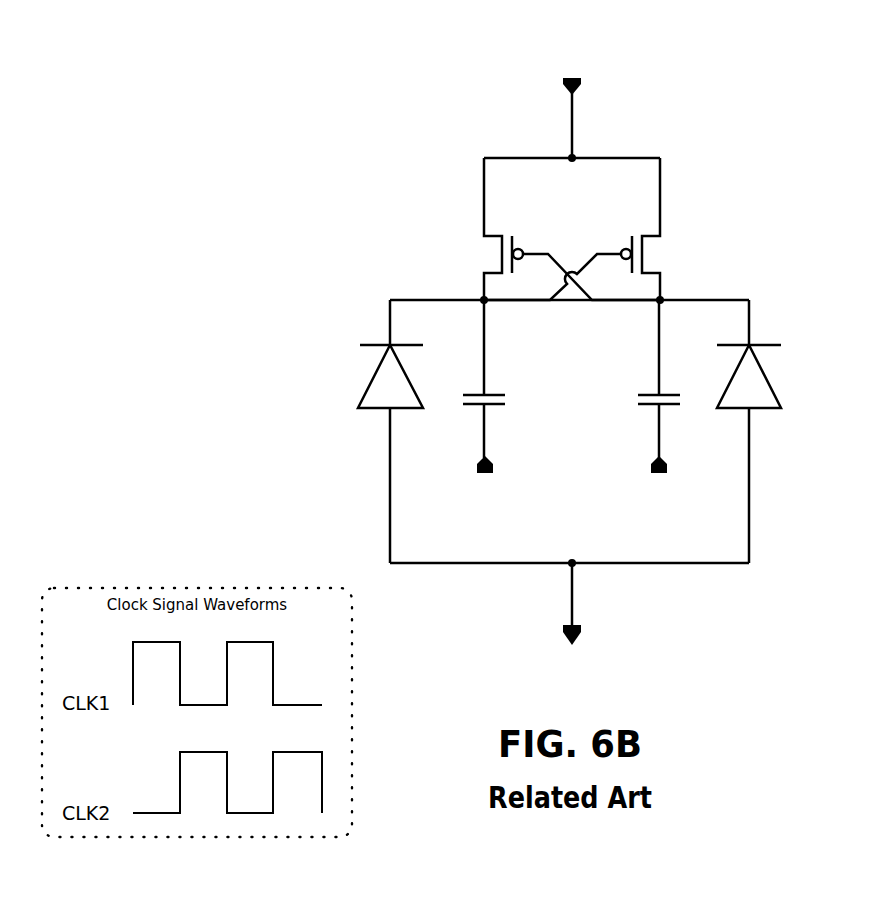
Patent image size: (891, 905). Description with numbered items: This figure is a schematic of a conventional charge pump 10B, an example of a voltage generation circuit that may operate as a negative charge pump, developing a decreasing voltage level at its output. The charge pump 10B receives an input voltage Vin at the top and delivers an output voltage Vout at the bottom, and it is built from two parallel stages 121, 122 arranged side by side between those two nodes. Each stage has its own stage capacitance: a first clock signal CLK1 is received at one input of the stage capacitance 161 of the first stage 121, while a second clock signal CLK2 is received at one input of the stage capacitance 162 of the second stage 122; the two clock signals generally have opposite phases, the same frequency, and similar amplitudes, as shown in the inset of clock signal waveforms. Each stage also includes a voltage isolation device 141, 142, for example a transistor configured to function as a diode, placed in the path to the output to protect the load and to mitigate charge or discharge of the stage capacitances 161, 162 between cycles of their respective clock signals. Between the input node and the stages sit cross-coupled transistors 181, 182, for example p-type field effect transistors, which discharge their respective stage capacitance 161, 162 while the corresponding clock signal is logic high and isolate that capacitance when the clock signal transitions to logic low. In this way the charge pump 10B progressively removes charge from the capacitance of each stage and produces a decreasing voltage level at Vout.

The charge pump 10B is at (336, 139).
The stage 121 is at (366, 263).
The stage 122 is at (774, 263).
The voltage isolation device 141 is at (367, 392).
The voltage isolation device 142 is at (772, 390).
The stage capacitance 161 is at (489, 392).
The stage capacitance 162 is at (651, 390).
The cross-coupled transistor 181 is at (494, 235).
The cross-coupled transistor 182 is at (650, 235).